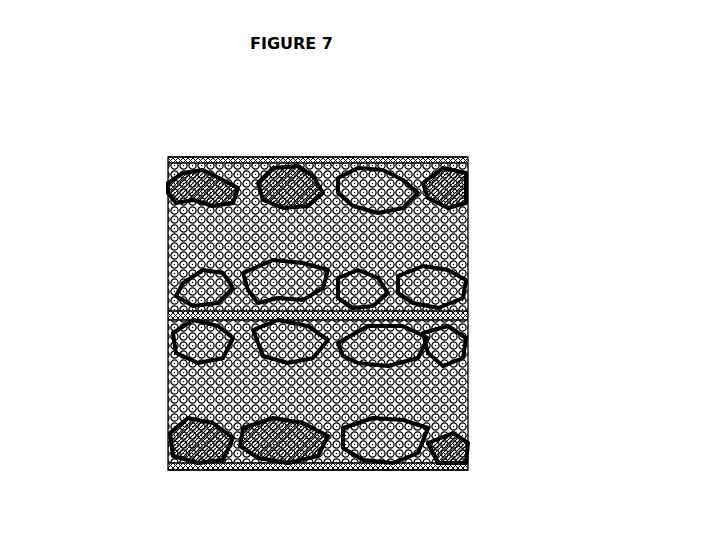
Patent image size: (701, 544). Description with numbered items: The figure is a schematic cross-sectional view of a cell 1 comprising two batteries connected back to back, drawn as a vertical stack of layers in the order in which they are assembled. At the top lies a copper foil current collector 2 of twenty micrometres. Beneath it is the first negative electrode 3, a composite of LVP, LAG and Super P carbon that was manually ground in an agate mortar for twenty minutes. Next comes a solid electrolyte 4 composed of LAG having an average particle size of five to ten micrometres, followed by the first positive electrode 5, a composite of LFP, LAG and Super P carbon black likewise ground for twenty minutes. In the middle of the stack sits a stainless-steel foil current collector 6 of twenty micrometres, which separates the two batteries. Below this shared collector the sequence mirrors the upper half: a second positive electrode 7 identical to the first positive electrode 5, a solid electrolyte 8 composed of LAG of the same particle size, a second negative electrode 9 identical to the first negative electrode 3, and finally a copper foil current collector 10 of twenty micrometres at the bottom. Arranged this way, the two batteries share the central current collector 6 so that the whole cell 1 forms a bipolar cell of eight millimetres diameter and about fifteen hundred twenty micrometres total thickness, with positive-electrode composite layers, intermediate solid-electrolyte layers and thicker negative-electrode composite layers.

The cell 1 is at (522, 172).
The current collector 2 is at (190, 149).
The first negative electrode 3 is at (458, 200).
The solid electrolyte 4 is at (160, 225).
The first positive electrode 5 is at (458, 275).
The current collector 6 is at (160, 322).
The second positive electrode 7 is at (458, 328).
The solid electrolyte 8 is at (162, 392).
The second negative electrode 9 is at (458, 430).
The current collector 10 is at (245, 463).